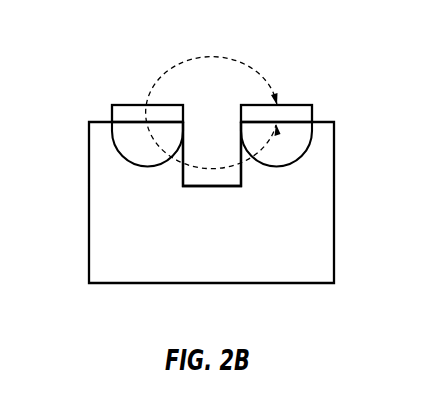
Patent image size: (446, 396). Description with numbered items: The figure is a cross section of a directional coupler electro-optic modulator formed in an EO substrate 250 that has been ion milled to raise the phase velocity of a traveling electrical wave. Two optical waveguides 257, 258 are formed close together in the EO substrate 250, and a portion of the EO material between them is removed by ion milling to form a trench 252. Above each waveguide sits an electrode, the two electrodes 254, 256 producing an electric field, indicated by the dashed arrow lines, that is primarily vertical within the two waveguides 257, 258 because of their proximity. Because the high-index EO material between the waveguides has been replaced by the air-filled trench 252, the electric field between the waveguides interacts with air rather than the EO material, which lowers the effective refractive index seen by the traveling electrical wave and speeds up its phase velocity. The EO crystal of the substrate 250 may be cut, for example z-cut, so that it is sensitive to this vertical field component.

The EO substrate 250 is at (327, 277).
The trench 252 is at (227, 158).
The electrode 254 is at (115, 99).
The electrode 256 is at (308, 99).
The optical waveguide 257 is at (137, 166).
The optical waveguide 258 is at (283, 166).